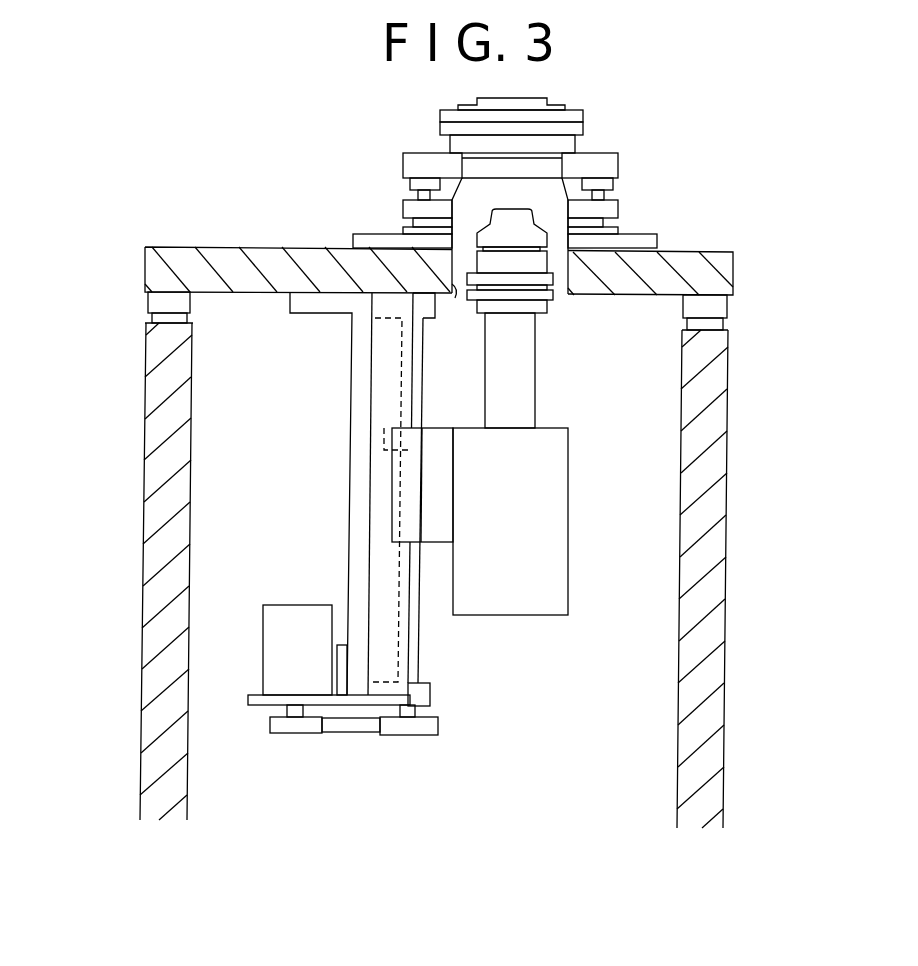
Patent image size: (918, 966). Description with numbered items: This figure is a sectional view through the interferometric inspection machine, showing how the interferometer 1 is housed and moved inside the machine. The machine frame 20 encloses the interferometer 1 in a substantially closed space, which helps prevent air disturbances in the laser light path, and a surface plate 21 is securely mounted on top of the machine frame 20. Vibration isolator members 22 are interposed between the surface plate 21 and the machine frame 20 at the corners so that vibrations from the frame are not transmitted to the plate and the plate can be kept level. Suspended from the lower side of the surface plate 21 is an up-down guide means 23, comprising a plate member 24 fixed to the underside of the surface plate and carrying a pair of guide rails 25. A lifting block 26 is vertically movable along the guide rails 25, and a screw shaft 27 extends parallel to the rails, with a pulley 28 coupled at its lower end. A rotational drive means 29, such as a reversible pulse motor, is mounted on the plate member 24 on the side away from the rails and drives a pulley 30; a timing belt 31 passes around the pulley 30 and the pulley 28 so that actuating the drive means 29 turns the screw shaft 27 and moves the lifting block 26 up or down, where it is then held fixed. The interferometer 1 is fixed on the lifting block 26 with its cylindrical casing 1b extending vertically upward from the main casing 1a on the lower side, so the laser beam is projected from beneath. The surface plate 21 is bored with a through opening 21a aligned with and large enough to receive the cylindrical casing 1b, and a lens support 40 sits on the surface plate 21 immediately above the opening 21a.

The interferometer 1 is at (546, 464).
The main casing 1a is at (558, 573).
The cylindrical casing 1b is at (530, 370).
The machine frame 20 is at (720, 498).
The surface plate 21 is at (230, 252).
The through opening 21a is at (457, 296).
The vibration isolator member 22 is at (153, 302).
The up-down guide means 23 is at (348, 440).
The plate member 24 is at (355, 475).
The guide rails 25 is at (403, 665).
The lifting block 26 is at (428, 505).
The screw shaft 27 is at (417, 617).
The pulley 28 is at (438, 727).
The rotational drive means 29 is at (271, 663).
The pulley 30 is at (302, 728).
The timing belt 31 is at (360, 728).
The lens support 40 is at (618, 196).